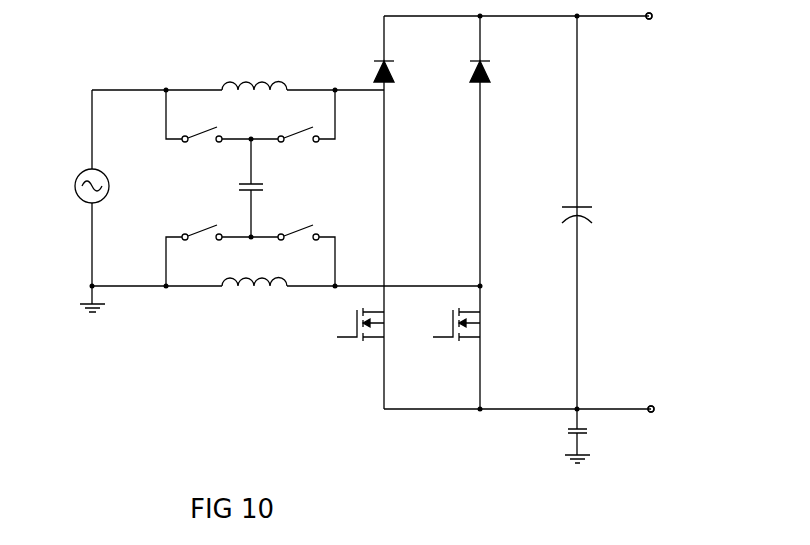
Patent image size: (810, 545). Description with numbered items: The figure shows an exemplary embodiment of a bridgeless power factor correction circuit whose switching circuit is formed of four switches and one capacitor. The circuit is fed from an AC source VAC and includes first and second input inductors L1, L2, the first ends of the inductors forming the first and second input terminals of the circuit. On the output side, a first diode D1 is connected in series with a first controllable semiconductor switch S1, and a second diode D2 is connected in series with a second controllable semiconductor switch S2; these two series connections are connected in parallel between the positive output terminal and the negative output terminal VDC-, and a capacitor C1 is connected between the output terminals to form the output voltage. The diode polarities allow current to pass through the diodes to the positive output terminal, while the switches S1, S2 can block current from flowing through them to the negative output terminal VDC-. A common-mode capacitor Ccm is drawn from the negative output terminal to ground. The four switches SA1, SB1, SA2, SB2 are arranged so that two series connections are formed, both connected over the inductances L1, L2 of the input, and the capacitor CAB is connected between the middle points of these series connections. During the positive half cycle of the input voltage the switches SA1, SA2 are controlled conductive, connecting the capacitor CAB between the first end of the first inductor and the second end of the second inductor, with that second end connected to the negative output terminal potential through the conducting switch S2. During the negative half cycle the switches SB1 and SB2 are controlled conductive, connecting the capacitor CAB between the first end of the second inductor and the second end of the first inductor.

The first input inductor L1 is at (254, 75).
The second input inductor L2 is at (254, 293).
The switch SA1 is at (208, 116).
The switch SB1 is at (293, 116).
The switch SA2 is at (293, 255).
The switch SB2 is at (208, 255).
The capacitor CAB is at (270, 188).
The first diode D1 is at (397, 71).
The second diode D2 is at (494, 71).
The capacitor C1 is at (561, 216).
The common mode capacitor Ccm is at (593, 436).
The first controllable semiconductor switch S1 is at (356, 324).
The second controllable semiconductor switch S2 is at (453, 324).
The AC voltage source VAC is at (74, 186).
The negative output terminal VDC- is at (671, 411).